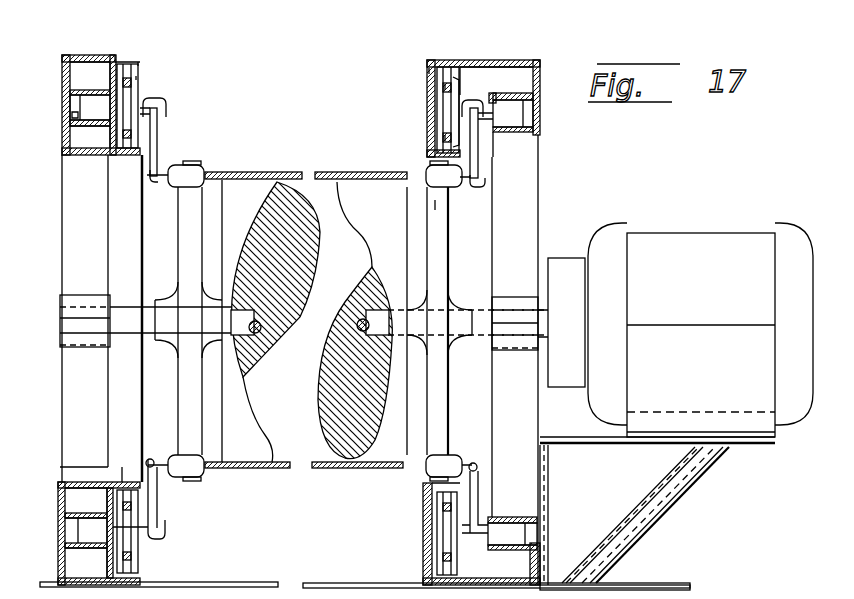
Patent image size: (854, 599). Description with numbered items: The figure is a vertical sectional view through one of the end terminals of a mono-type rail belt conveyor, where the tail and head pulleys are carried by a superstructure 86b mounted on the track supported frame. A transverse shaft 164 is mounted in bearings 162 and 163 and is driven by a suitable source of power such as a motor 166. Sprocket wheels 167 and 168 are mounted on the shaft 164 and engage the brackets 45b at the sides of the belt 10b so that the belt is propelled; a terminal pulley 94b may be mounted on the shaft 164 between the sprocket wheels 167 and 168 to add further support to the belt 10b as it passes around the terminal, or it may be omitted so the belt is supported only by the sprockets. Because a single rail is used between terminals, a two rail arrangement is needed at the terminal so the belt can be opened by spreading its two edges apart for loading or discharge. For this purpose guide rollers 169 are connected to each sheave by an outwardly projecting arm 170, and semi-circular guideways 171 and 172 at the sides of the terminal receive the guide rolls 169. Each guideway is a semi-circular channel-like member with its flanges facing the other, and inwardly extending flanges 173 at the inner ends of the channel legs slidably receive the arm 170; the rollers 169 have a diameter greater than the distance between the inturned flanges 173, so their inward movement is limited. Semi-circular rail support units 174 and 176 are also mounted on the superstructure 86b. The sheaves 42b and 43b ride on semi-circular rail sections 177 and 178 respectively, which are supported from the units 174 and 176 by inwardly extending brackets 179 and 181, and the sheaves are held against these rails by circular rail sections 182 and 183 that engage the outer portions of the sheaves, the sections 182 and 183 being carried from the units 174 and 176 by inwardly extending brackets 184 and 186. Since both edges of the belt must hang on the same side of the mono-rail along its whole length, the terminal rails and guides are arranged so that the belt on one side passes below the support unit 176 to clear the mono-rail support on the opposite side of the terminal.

The belt 10b is at (333, 470).
The sheave 42b is at (140, 543).
The sheave 43b is at (142, 82).
The brackets 45b is at (175, 470).
The superstructure 86b is at (559, 508).
The terminal pulley 94b is at (252, 455).
The bearing 162 is at (90, 300).
The bearing 163 is at (518, 303).
The transverse shaft 164 is at (480, 320).
The motor 166 is at (690, 257).
The sprocket wheel 167 is at (200, 187).
The sprocket wheel 168 is at (437, 205).
The guide rollers 169 is at (95, 108).
The outwardly projecting arm 170 is at (112, 108).
The semi-circular guideway 171 is at (73, 118).
The semi-circular guideway 172 is at (530, 130).
The inwardly extending flanges 173 is at (105, 122).
The semi-circular rail support unit 174 is at (130, 80).
The semi-circular rail support unit 176 is at (427, 62).
The semi-circular rail section 177 is at (147, 130).
The semi-circular rail section 178 is at (447, 138).
The inwardly extending bracket 179 is at (143, 185).
The inwardly extending bracket 181 is at (465, 183).
The circular rail section 182 is at (140, 77).
The circular rail section 183 is at (447, 87).
The inwardly extending bracket 184 is at (148, 63).
The inwardly extending bracket 186 is at (428, 70).